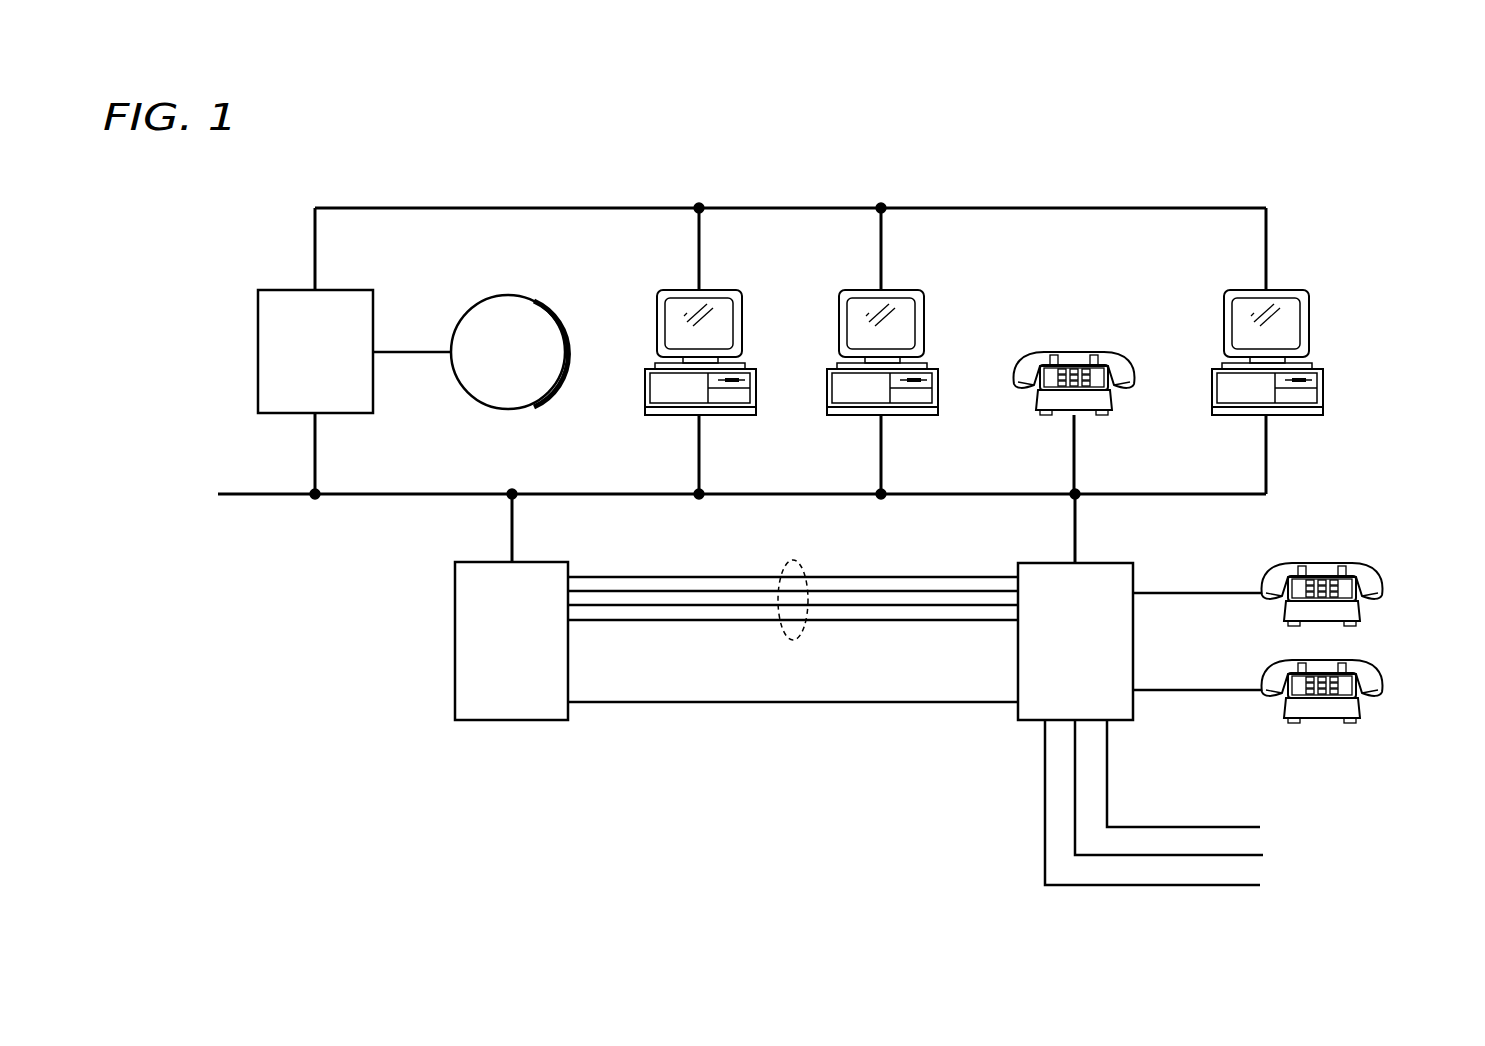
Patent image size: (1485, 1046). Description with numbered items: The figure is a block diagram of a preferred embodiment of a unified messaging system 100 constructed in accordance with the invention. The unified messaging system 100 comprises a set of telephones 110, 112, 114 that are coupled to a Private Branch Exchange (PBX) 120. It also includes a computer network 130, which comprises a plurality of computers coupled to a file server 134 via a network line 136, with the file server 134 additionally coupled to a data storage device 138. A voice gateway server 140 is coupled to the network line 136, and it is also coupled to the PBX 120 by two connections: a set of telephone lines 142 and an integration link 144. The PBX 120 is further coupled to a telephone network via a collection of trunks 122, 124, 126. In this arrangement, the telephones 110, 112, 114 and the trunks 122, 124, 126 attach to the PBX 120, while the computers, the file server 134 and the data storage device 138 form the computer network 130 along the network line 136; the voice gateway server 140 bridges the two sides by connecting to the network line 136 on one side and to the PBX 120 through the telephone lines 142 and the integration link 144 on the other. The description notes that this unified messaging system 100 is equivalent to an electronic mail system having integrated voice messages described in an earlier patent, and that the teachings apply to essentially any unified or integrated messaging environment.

The unified messaging system 100 is at (1132, 135).
The telephone 110 is at (1072, 348).
The telephone 112 is at (1384, 597).
The telephone 114 is at (1384, 694).
The Private Branch Exchange (PBX) 120 is at (1018, 562).
The trunk 122 is at (1248, 826).
The trunk 124 is at (1254, 854).
The trunk 126 is at (1258, 884).
The computer network 130 is at (742, 208).
The file server 134 is at (348, 290).
The network line 136 is at (1268, 460).
The data storage device 138 is at (504, 296).
The voice gateway server 140 is at (455, 638).
The telephone lines 142 is at (792, 558).
The integration link 144 is at (792, 708).